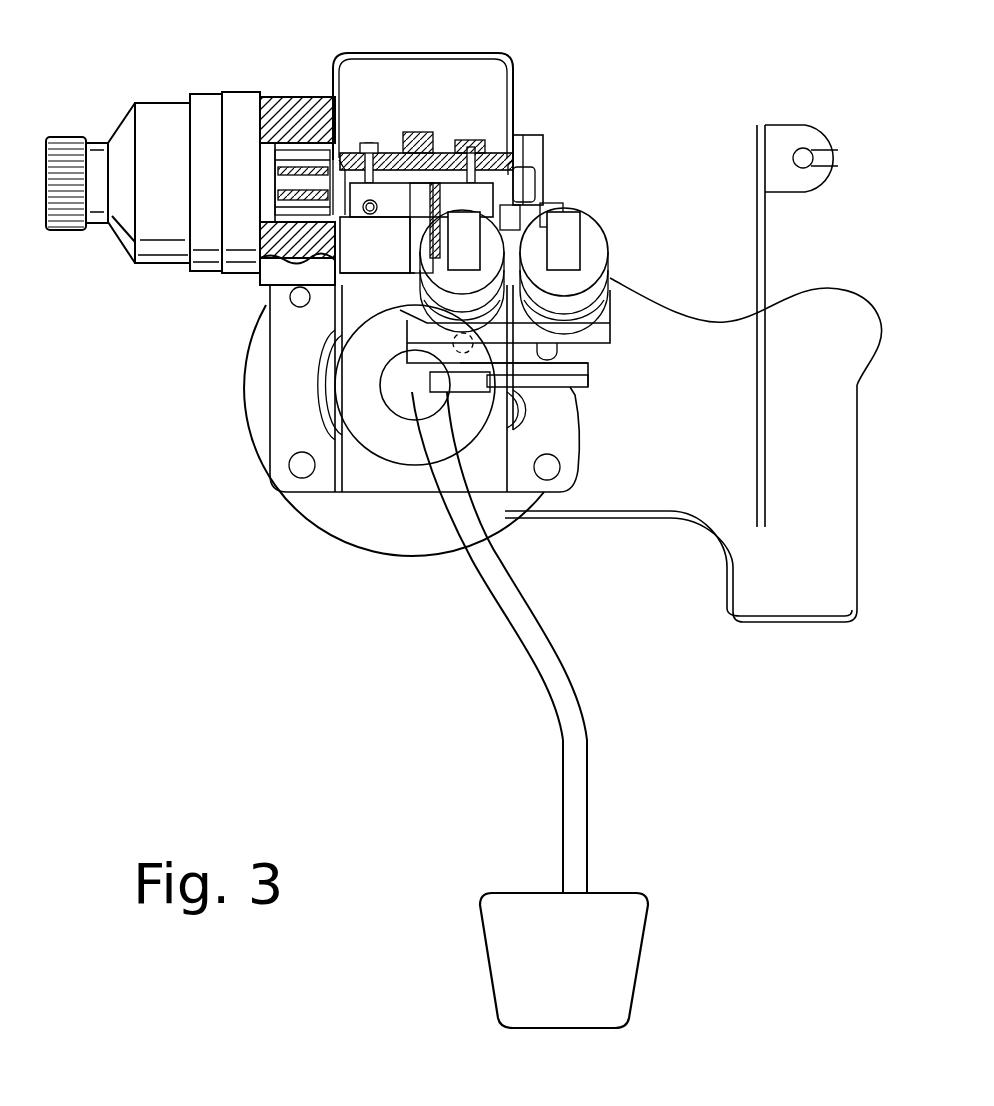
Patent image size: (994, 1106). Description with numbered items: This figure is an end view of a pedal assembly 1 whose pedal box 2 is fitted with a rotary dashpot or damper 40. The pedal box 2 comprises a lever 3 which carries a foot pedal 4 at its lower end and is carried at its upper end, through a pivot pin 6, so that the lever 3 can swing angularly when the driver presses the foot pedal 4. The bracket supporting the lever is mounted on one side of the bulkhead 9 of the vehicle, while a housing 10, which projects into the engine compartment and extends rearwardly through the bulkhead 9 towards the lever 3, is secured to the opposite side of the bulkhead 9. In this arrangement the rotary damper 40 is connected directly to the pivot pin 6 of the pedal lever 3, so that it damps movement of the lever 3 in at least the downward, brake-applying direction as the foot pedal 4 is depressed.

The pedal assembly 1 is at (588, 727).
The pedal box 2 is at (380, 265).
The lever 3 is at (577, 853).
The foot pedal 4 is at (612, 982).
The pivot pin 6 is at (335, 165).
The bulkhead 9 is at (694, 327).
The housing 10 is at (377, 437).
The rotary dashpot or damper 40 is at (208, 100).